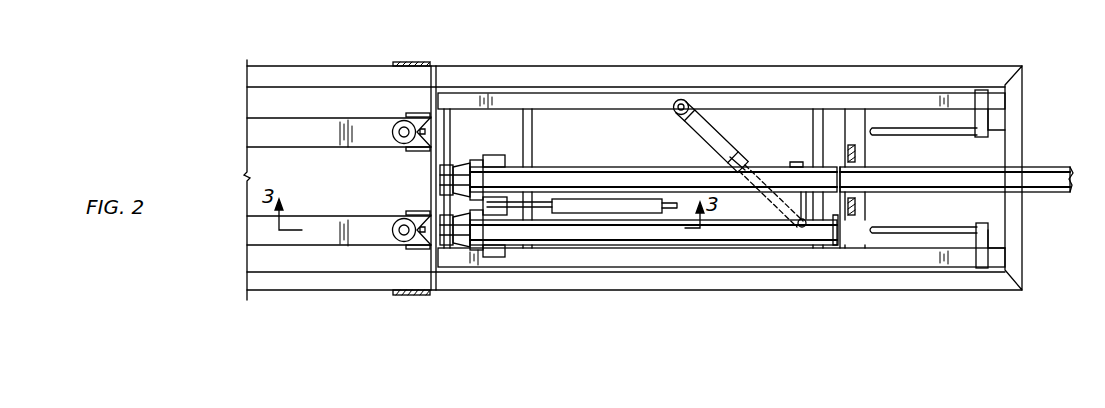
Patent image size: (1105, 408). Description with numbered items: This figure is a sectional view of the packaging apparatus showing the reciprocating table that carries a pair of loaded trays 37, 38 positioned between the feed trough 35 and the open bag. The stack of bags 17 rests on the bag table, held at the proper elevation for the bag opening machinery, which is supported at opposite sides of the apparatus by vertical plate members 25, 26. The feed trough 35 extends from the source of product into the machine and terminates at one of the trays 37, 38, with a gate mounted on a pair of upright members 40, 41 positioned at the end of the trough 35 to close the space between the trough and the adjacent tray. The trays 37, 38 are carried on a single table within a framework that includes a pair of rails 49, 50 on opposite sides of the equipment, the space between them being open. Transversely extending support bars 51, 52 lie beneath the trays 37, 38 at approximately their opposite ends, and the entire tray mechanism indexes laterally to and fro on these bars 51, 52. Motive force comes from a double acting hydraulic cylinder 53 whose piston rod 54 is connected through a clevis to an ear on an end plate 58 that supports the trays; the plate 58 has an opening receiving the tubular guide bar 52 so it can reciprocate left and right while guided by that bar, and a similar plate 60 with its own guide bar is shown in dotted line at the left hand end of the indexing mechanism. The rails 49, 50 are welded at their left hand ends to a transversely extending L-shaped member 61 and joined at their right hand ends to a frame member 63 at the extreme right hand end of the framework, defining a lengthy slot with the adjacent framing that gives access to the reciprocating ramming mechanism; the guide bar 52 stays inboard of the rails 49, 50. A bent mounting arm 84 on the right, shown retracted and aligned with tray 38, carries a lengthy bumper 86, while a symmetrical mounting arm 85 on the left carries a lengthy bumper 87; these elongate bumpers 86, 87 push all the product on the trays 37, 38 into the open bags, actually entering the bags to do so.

The stack of bags 17 is at (313, 130).
The vertical plate member 25 is at (412, 62).
The vertical plate member 26 is at (412, 296).
The feed trough 35 is at (1048, 173).
The loading tray 37 is at (585, 170).
The loading tray 38 is at (608, 245).
The upright member 40 is at (866, 210).
The upright member 41 is at (866, 152).
The rail 49 is at (620, 93).
The rail 50 is at (690, 267).
The support bar 51 is at (532, 138).
The support bar 52 is at (810, 120).
The double acting hydraulic cylinder 53 is at (715, 108).
The piston rod 54 is at (745, 158).
The end plate 58 is at (833, 218).
The plate 60 is at (543, 227).
The L-shaped member 61 is at (450, 130).
The frame member 63 is at (1017, 87).
The mounting arm 84 is at (990, 230).
The mounting arm 85 is at (988, 118).
The bumper 86 is at (933, 233).
The bumper 87 is at (930, 128).